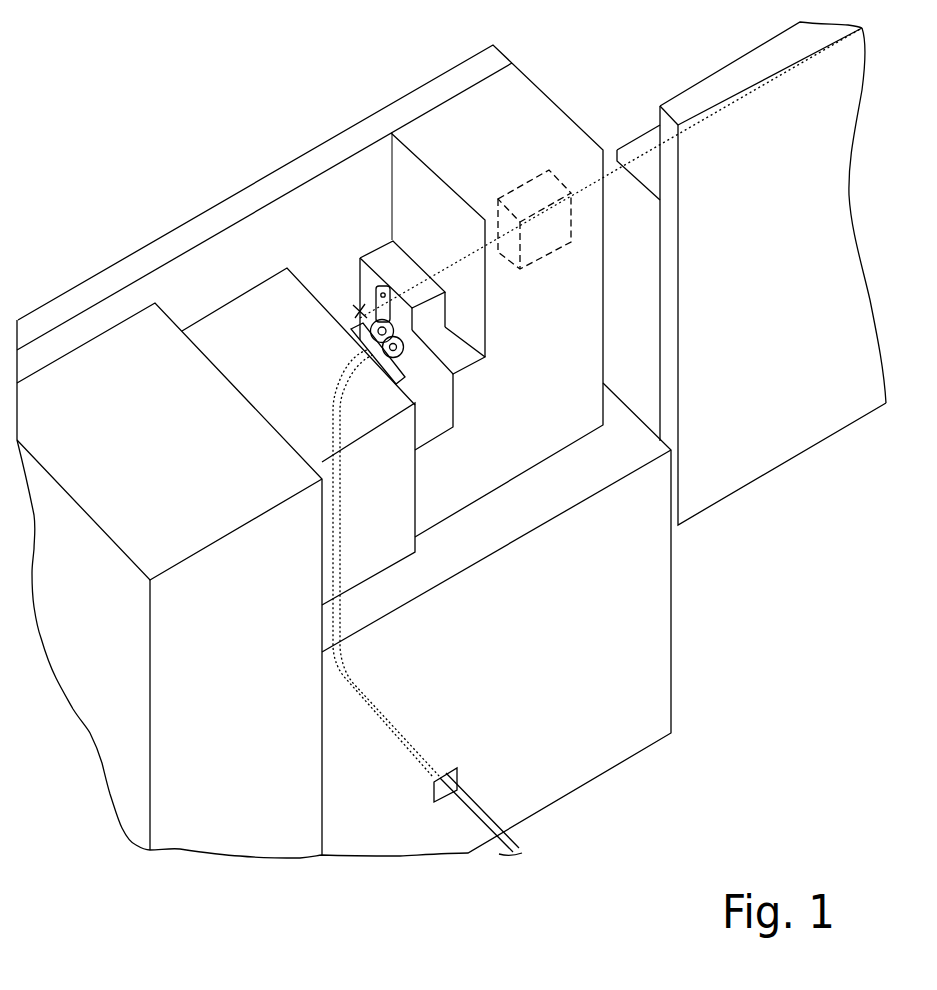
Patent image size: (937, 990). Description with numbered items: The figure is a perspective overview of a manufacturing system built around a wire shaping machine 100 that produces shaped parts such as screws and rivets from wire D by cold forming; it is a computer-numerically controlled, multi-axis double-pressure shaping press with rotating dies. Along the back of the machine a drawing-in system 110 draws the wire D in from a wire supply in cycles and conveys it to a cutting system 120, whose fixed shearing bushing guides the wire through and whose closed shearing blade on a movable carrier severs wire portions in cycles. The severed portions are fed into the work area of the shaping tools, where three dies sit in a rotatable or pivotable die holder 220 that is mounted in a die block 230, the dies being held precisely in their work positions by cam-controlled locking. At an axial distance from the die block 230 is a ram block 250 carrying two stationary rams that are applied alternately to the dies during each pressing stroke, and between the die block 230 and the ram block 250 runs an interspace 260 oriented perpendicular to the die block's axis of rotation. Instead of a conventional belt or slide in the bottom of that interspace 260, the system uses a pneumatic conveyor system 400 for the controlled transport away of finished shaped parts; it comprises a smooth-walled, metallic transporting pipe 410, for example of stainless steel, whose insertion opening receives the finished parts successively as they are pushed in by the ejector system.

The wire shaping machine 100 is at (85, 144).
The drawing-in system 110 is at (527, 185).
The cutting system 120 is at (356, 297).
The die holder 220 is at (403, 347).
The die block 230 is at (438, 378).
The ram block 250 is at (368, 341).
The interspace 260 is at (430, 428).
The pneumatic conveyor system 400 is at (363, 407).
The transporting pipe 410 is at (393, 733).
The wire D is at (607, 175).